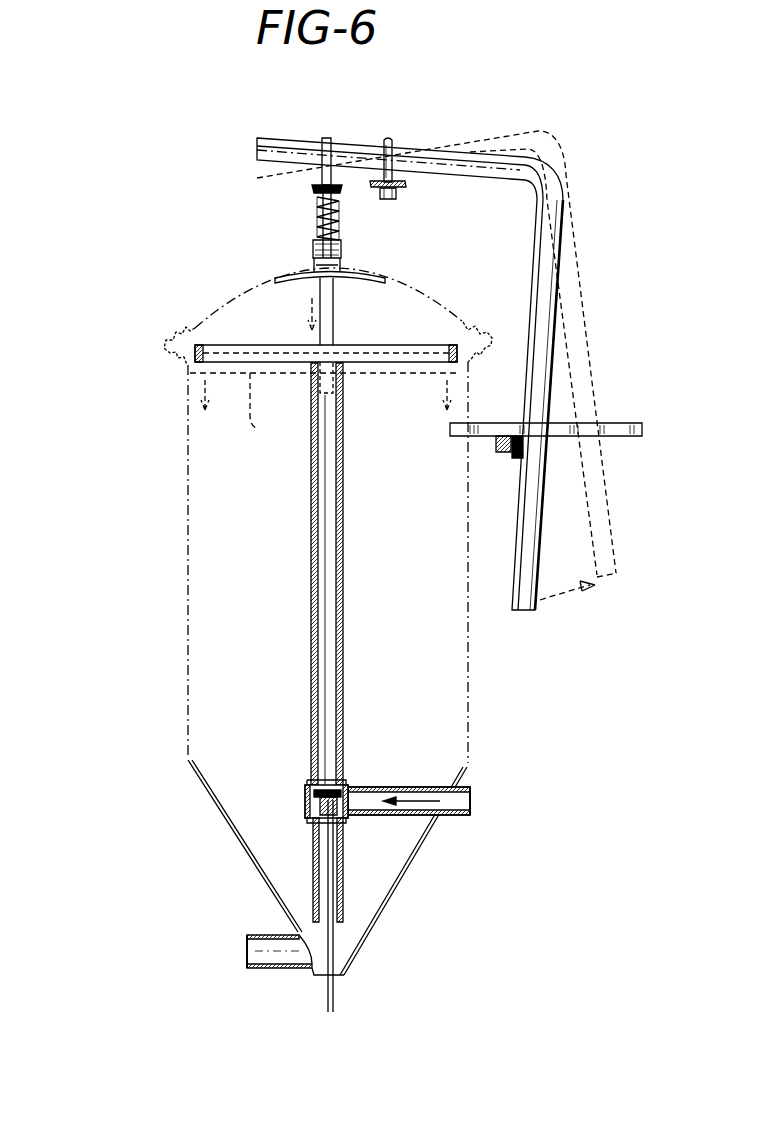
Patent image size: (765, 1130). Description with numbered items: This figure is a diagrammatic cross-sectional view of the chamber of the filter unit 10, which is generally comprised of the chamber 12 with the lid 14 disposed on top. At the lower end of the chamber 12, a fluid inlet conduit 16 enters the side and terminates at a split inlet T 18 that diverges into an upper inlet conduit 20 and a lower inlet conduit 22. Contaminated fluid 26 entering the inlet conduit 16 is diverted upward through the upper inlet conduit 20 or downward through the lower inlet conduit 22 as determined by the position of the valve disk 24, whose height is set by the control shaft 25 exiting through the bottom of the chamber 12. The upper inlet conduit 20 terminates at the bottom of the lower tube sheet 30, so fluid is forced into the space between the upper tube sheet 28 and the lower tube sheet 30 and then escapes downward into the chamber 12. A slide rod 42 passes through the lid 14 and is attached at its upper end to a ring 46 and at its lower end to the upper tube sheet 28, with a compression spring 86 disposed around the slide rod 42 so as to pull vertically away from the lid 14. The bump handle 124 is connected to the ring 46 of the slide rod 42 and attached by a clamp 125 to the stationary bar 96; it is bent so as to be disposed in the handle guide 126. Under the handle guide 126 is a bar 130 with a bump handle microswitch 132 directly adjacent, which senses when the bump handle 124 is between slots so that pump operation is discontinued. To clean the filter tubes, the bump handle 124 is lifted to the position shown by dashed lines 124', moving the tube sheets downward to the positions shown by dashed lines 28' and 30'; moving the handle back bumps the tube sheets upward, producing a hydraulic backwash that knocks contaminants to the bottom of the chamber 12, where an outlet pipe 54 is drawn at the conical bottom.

The filter unit 10 is at (141, 566).
The chamber 12 is at (188, 508).
The lid 14 is at (290, 277).
The fluid inlet conduit 16 is at (449, 817).
The inlet T 18 is at (305, 792).
The upper inlet conduit 20 is at (311, 674).
The lower inlet conduit 22 is at (344, 892).
The valve disk 24 is at (333, 790).
The control shaft 25 is at (334, 992).
The contaminated fluid 26 is at (420, 788).
The upper tube sheet 28 is at (311, 315).
The upper tube sheet lowered position 28' is at (316, 331).
The lower tube sheet 30 is at (298, 391).
The lower tube sheet lowered position 30' is at (236, 407).
The slide rod 42 is at (320, 214).
The ring 46 is at (324, 140).
The outlet pipe 54 is at (278, 970).
The compression spring 86 is at (340, 233).
The stationary bar 96 is at (401, 187).
The bump handle 124 is at (410, 406).
The bump handle lifted position 124' is at (465, 380).
The clamp 125 is at (392, 140).
The handle guide 126 is at (606, 423).
The bar 130 is at (512, 458).
The bump handle microswitch 132 is at (496, 444).